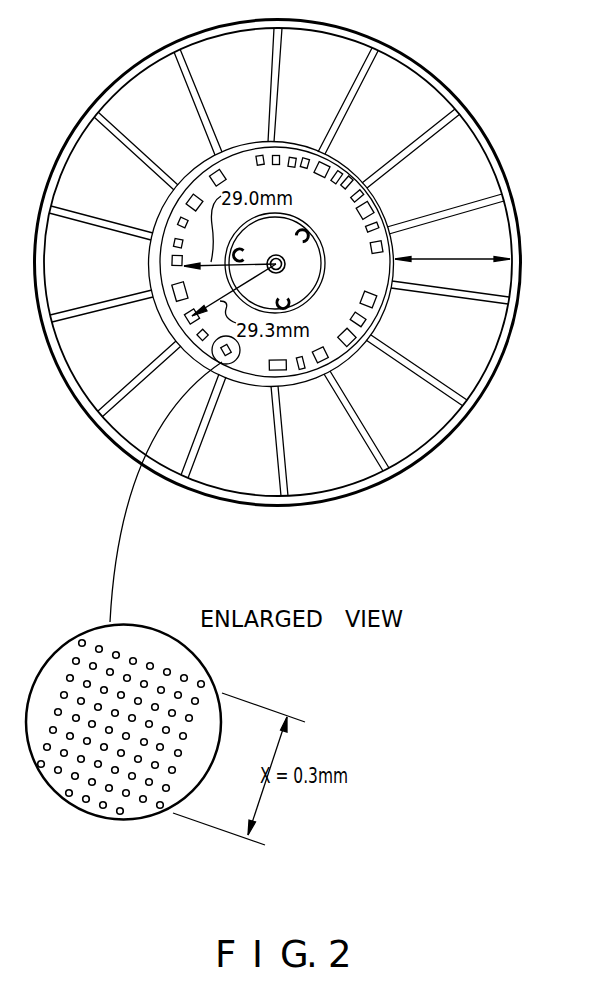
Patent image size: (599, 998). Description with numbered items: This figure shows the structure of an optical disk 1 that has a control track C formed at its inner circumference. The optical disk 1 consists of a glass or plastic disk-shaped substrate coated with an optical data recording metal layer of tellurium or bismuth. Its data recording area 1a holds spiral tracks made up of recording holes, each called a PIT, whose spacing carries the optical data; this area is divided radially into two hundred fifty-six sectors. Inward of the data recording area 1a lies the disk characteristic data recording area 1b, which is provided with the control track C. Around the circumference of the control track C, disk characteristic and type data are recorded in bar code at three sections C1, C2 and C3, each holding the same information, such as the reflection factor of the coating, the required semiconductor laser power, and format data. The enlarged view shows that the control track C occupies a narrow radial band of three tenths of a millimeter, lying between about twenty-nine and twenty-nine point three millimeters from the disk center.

The optical disk 1 is at (449, 437).
The data recording area 1a is at (433, 260).
The disk characteristic data recording area 1b is at (373, 272).
The control track C is at (360, 171).
The first section of control track C1 is at (243, 139).
The second section of control track C2 is at (258, 386).
The third section of control track C3 is at (155, 226).
The pit PIT is at (207, 685).